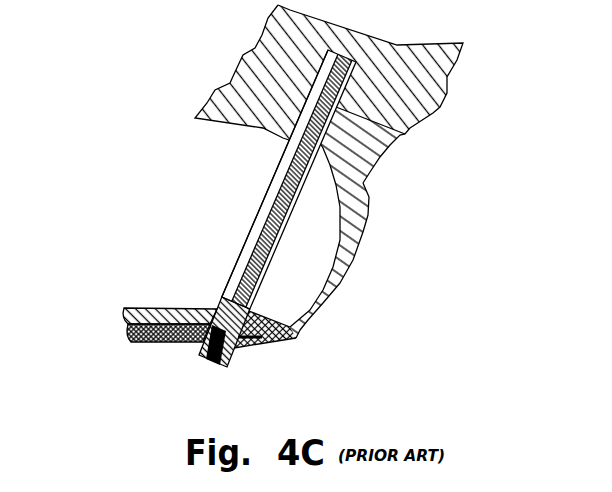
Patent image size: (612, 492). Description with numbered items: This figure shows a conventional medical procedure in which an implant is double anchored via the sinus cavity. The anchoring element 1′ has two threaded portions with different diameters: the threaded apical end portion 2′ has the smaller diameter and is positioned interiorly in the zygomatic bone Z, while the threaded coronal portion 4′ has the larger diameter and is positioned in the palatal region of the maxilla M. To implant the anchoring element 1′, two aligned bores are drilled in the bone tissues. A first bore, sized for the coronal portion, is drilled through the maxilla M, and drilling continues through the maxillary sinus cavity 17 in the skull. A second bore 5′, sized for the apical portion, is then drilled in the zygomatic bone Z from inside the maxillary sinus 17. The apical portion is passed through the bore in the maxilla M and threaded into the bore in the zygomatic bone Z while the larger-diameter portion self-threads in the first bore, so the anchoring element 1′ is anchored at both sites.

The zygomatic bone Z is at (277, 65).
The anchoring element 1′ is at (290, 222).
The threaded apical end portion 2′ is at (400, 137).
The second bore 5′ is at (388, 153).
The maxillary sinus cavity 17 is at (226, 222).
The threaded coronal portion 4′ is at (258, 320).
The maxilla M is at (126, 320).